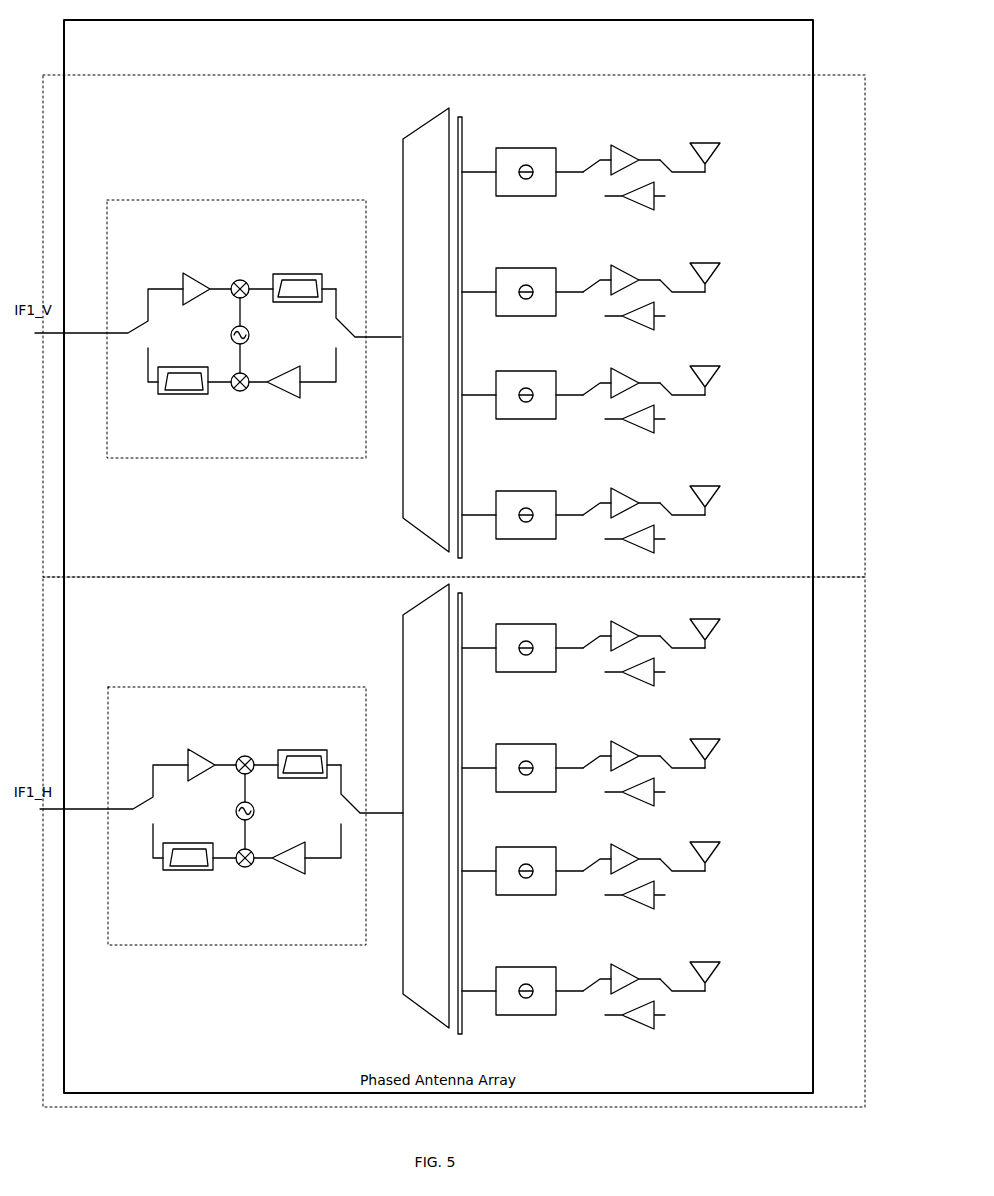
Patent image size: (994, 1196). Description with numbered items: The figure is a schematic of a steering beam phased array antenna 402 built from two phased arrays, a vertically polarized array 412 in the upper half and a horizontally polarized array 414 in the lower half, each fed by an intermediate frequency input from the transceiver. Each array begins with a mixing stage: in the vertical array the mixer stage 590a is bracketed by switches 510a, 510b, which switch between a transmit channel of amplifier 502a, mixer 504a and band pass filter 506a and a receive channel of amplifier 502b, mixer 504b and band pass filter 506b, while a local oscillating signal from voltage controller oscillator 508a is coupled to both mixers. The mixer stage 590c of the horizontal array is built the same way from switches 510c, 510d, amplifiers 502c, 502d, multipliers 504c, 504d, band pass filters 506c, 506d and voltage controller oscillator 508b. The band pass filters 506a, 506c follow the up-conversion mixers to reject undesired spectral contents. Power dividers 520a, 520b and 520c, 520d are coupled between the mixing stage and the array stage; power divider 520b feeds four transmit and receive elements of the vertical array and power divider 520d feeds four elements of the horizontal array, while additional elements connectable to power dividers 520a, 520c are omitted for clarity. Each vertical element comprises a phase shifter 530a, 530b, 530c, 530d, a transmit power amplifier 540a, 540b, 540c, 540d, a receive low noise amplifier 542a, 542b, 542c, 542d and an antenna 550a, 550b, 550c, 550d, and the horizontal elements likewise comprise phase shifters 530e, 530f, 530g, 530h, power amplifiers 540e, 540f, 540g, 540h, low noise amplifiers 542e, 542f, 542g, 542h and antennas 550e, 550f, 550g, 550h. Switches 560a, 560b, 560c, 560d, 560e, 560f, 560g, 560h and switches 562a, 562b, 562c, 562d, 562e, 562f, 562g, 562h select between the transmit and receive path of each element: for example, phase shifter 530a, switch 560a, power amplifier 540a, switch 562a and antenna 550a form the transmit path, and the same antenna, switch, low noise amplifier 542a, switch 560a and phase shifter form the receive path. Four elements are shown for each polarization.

The phased array antenna 402 is at (813, 55).
The vertically polarized array 412 is at (843, 76).
The horizontally polarized array 414 is at (866, 611).
The mixer stage 590a is at (205, 200).
The mixer stage 590c is at (213, 685).
The amplifier 502a is at (184, 275).
The amplifier 502b is at (302, 397).
The amplifier 502c is at (186, 753).
The amplifier 502d is at (304, 868).
The mixer 504a is at (236, 281).
The mixer 504b is at (244, 391).
The multiplier 504c is at (239, 743).
The multiplier 504d is at (252, 877).
The band pass filter 506a is at (308, 274).
The band pass filter 506b is at (170, 394).
The band pass filter 506c is at (299, 752).
The band pass filter 506d is at (199, 869).
The voltage controller oscillator 508a is at (232, 331).
The voltage controller oscillator 508b is at (217, 811).
The switch 510a is at (140, 327).
The switch 510b is at (340, 322).
The switch 510c is at (114, 811).
The switch 510d is at (354, 811).
The power divider 520a is at (428, 122).
The power divider 520b is at (462, 118).
The power divider 520c is at (404, 615).
The power divider 520d is at (463, 612).
The phase shifter 530a is at (549, 148).
The phase shifter 530b is at (528, 279).
The phase shifter 530c is at (527, 382).
The phase shifter 530d is at (528, 502).
The phase shifter 530e is at (528, 635).
The phase shifter 530f is at (527, 755).
The phase shifter 530g is at (528, 858).
The phase shifter 530h is at (528, 978).
The transmit power amplifier 540a is at (623, 150).
The transmit power amplifier 540b is at (646, 268).
The transmit power amplifier 540c is at (645, 371).
The transmit power amplifier 540d is at (646, 491).
The transmit power amplifier 540e is at (646, 624).
The transmit power amplifier 540f is at (645, 744).
The transmit power amplifier 540g is at (646, 847).
The transmit power amplifier 540h is at (646, 967).
The receive low noise amplifier 542a is at (652, 208).
The receive low noise amplifier 542b is at (657, 328).
The receive low noise amplifier 542c is at (656, 431).
The receive low noise amplifier 542d is at (657, 551).
The receive low noise amplifier 542e is at (657, 684).
The receive low noise amplifier 542f is at (656, 804).
The receive low noise amplifier 542g is at (657, 907).
The receive low noise amplifier 542h is at (657, 1027).
The antenna 550a is at (718, 143).
The antenna 550b is at (731, 265).
The antenna 550c is at (730, 368).
The antenna 550d is at (731, 488).
The antenna 550e is at (731, 621).
The antenna 550f is at (730, 741).
The antenna 550g is at (731, 844).
The antenna 550h is at (731, 964).
The switch 560a is at (585, 174).
The switch 560b is at (570, 312).
The switch 560c is at (570, 415).
The switch 560d is at (570, 535).
The switch 560e is at (570, 668).
The switch 560f is at (571, 788).
The switch 560g is at (570, 891).
The switch 560h is at (570, 1011).
The switch 562a is at (668, 168).
The switch 562b is at (696, 300).
The switch 562c is at (695, 403).
The switch 562d is at (696, 523).
The switch 562e is at (696, 656).
The switch 562f is at (695, 776).
The switch 562g is at (696, 879).
The switch 562h is at (696, 999).